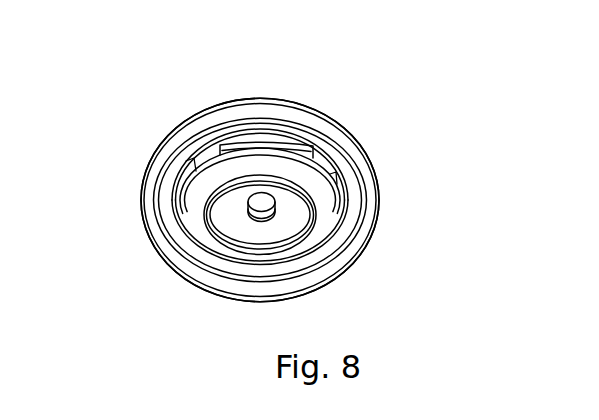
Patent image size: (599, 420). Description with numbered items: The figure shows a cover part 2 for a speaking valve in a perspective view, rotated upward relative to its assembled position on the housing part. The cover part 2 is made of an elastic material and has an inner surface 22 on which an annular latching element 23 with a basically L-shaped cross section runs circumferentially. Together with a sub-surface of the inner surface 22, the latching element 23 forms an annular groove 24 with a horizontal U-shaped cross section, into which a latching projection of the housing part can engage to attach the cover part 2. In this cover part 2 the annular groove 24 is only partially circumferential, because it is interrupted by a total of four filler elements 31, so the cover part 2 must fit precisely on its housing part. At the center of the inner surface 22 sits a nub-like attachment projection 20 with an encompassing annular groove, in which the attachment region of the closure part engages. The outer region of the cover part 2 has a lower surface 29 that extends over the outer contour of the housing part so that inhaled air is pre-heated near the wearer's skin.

The cover part 2 is at (267, 177).
The attachment projection 20 is at (268, 204).
The inner surface 22 is at (229, 168).
The latching element 23 is at (357, 189).
The annular groove 24 is at (272, 142).
The lower surface 29 is at (145, 187).
The filler element 31 is at (324, 165).